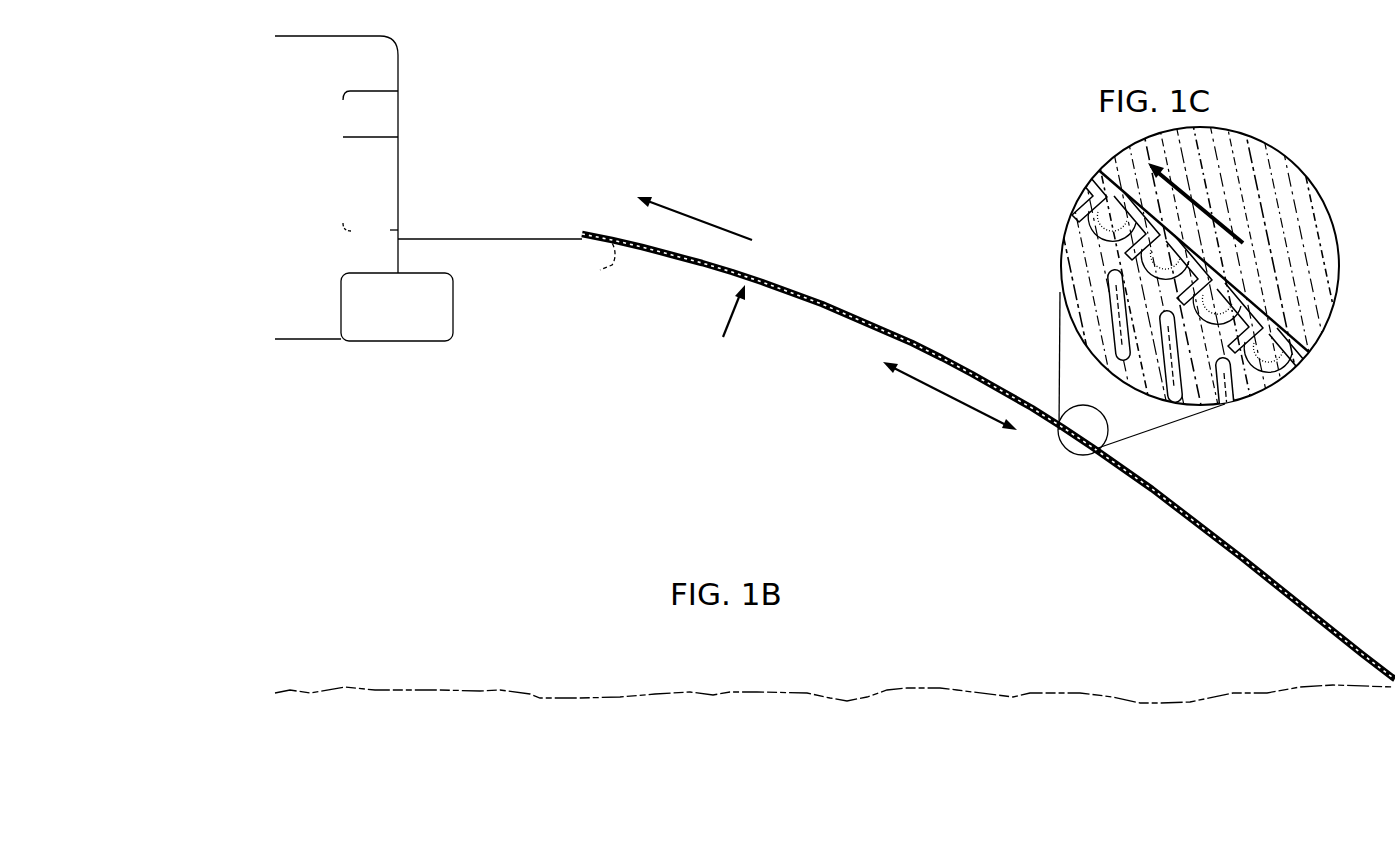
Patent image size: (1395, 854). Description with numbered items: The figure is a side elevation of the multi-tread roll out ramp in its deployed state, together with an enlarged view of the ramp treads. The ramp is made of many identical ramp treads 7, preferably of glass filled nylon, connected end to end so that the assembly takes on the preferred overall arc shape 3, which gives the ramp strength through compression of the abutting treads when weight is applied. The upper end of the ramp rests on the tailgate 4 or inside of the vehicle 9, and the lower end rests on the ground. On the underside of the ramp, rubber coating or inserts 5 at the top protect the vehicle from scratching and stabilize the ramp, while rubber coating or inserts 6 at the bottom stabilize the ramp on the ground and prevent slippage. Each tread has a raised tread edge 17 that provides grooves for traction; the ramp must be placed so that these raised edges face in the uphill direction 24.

In FIG. 1B, the overall arc shape of ramp 3 is at (950, 396).
In FIG. 1B, the tailgate 4 is at (522, 258).
In FIG. 1B, the rubber coating or inserts at top 5 is at (581, 237).
In FIG. 1B, the rubber coating or inserts at bottom 6 is at (1390, 685).
In FIG. 1B, the ramp tread 7 is at (730, 327).
In FIG. 1B, the vehicle 9 is at (321, 317).
In FIG. 1B, the raised tread edge 17 is at (848, 313).
In FIG. 1B, the uphill direction 24 is at (711, 227).
In FIG. 1C, the uphill direction 24 is at (1214, 216).